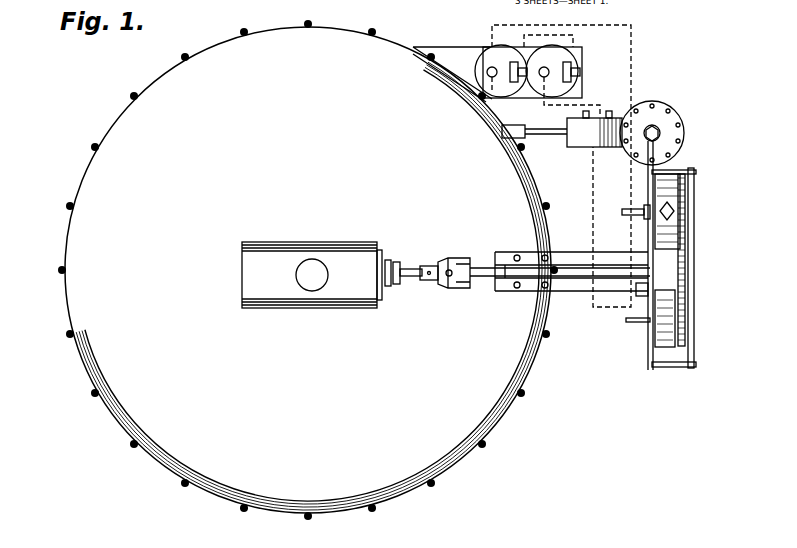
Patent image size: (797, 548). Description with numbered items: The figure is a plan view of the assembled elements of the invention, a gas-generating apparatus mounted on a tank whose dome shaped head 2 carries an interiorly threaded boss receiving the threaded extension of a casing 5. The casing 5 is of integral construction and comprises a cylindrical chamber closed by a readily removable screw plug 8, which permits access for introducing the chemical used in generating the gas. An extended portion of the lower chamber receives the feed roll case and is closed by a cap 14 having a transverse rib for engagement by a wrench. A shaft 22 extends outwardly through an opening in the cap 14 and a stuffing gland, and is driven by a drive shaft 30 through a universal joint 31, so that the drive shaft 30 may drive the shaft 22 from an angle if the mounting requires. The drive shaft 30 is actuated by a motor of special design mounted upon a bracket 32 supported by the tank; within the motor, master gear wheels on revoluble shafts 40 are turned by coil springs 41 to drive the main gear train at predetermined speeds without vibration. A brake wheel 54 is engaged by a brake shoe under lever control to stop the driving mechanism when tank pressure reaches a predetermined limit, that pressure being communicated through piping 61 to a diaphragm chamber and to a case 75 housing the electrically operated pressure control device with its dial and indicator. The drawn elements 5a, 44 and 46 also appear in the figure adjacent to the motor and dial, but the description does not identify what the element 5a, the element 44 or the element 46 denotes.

The dome shaped head 2 is at (308, 270).
The casing 5 is at (360, 252).
The dial hub 5a is at (663, 102).
The screw plug 8 is at (310, 276).
The cap 14 is at (392, 284).
The shaft 22 is at (412, 268).
The drive shaft 30 is at (479, 270).
The universal joint 31 is at (447, 262).
The bracket 32 is at (575, 292).
The revoluble shafts 40 is at (642, 211).
The coil springs 41 is at (660, 195).
The rack 44 is at (622, 338).
The pawl 46 is at (636, 321).
The brake wheel 54 is at (652, 345).
The piping 61 is at (562, 138).
The case 75 is at (608, 118).